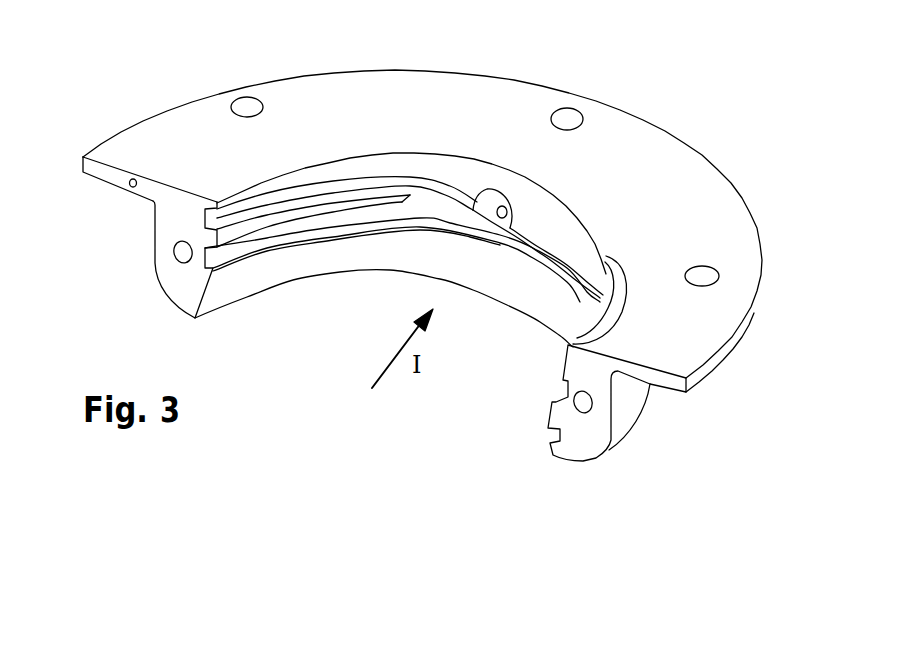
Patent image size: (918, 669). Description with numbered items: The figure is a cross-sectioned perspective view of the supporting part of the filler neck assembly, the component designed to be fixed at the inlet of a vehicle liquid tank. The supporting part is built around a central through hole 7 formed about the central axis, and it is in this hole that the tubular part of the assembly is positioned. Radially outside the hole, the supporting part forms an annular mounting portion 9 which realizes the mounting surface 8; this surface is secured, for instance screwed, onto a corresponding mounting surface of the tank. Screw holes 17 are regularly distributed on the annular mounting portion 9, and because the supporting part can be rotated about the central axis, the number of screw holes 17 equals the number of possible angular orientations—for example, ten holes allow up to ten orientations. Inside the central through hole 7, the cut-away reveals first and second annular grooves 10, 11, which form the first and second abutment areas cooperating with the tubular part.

The central through hole 7 is at (533, 210).
The mounting surface 8 is at (112, 180).
The annular mounting portion 9 is at (112, 173).
The first annular groove 10 is at (233, 250).
The second annular groove 11 is at (262, 203).
The screw holes 17 is at (706, 274).